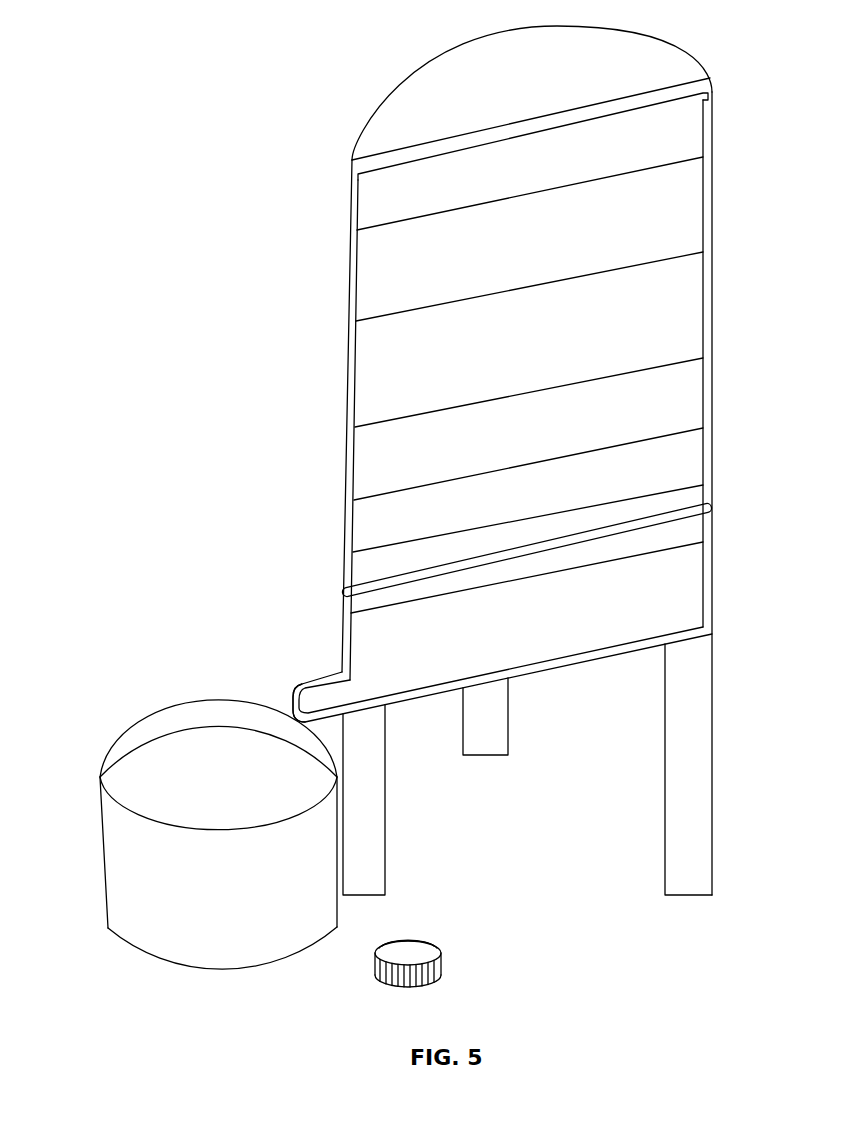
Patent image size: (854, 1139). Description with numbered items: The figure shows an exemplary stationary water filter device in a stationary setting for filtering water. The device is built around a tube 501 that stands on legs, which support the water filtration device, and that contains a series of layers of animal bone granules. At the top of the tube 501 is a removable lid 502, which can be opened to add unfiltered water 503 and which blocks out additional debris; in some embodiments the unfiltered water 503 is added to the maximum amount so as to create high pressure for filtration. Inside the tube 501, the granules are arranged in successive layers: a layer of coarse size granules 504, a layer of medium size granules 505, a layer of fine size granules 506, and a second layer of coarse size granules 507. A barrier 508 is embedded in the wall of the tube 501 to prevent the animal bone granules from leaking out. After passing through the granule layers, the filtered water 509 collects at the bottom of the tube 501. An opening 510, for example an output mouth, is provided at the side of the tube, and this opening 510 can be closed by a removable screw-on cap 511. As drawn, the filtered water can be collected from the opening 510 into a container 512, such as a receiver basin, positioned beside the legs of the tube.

The tube 501 is at (345, 187).
The removable lid 502 is at (420, 97).
The unfiltered water 503 is at (369, 268).
The layer of coarse size granules 504 is at (369, 368).
The layer of medium size granules 505 is at (382, 450).
The layer of fine size granules 506 is at (357, 522).
The second layer of coarse size granules 507 is at (359, 563).
The barrier 508 is at (345, 590).
The filtered water 509 is at (365, 647).
The opening 510 is at (309, 697).
The removable screw-on cap 511 is at (430, 960).
The container 512 is at (140, 881).